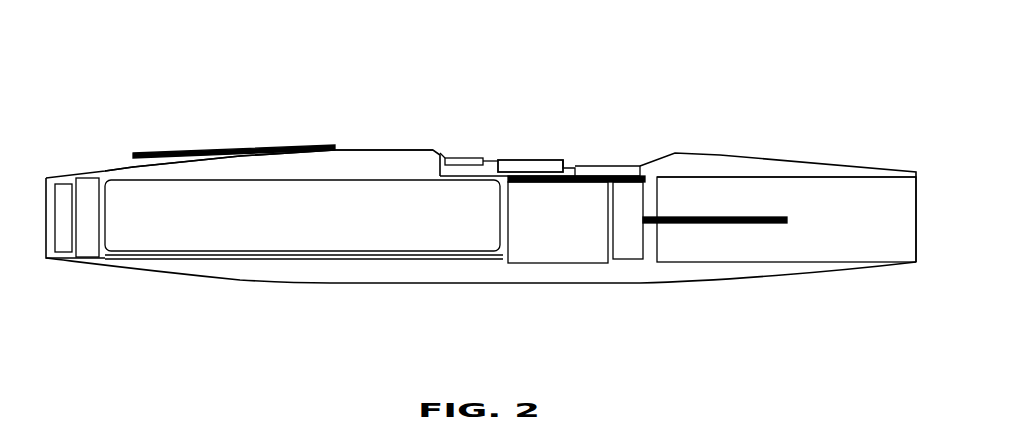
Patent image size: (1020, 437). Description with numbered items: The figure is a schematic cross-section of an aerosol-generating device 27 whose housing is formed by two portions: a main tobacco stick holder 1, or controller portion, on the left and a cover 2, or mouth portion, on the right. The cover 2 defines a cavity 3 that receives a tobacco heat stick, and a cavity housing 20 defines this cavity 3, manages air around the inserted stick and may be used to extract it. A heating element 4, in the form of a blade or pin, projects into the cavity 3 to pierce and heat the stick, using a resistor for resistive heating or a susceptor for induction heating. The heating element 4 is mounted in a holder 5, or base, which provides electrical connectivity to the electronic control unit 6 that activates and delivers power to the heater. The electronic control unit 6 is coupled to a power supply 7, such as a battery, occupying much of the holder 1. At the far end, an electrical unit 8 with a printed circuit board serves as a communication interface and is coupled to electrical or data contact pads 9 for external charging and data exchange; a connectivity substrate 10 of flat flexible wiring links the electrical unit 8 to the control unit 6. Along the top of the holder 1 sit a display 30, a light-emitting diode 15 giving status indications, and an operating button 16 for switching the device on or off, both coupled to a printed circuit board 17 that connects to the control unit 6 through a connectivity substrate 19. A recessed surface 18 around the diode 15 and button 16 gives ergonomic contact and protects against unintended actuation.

The aerosol-generating device 27 is at (151, 60).
The main tobacco stick holder 1 is at (353, 150).
The display 30 is at (188, 150).
The power supply 7 is at (128, 206).
The connectivity substrate 10 is at (160, 262).
The electrical or data contact pads 9 is at (62, 205).
The electrical unit 8 is at (88, 252).
The light-emitting diode 15 is at (470, 158).
The operating button 16 is at (540, 160).
The printed circuit board 17 is at (564, 162).
The recessed surface 18 is at (597, 166).
The connectivity substrate 19 is at (632, 176).
The electronic control unit 6 is at (540, 255).
The holder 5 is at (627, 253).
The heating element 4 is at (740, 223).
The cover 2 is at (727, 154).
The cavity 3 is at (902, 228).
The cavity housing 20 is at (795, 177).